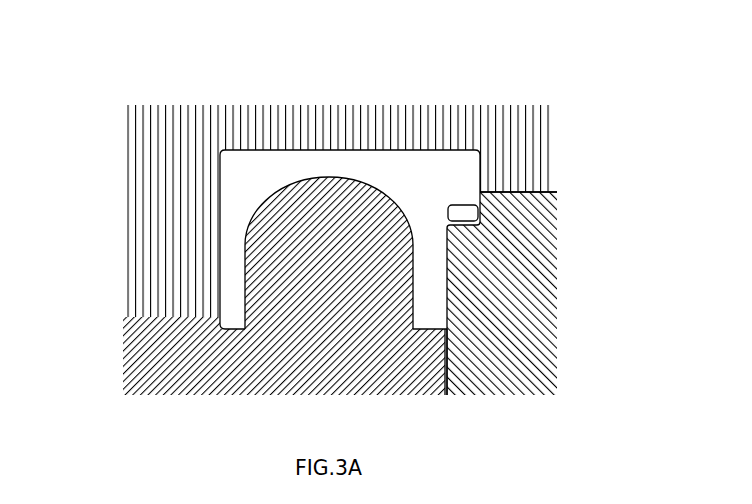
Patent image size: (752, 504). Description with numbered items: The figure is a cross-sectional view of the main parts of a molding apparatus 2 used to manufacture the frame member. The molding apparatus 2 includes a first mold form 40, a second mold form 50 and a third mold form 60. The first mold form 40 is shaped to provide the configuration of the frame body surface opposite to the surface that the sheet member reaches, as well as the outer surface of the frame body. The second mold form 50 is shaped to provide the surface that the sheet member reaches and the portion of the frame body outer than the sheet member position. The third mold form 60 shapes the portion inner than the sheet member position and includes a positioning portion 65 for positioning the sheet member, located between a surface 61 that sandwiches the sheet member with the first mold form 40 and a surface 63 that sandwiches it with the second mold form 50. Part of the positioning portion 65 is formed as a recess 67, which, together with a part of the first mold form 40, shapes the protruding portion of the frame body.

The molding apparatus 2 is at (110, 65).
The first mold form 40 is at (554, 118).
The second mold form 50 is at (123, 368).
The third mold form 60 is at (557, 290).
The surface 61 is at (553, 189).
The surface 63 is at (446, 366).
The positioning portion 65 is at (433, 248).
The recess 67 is at (457, 204).